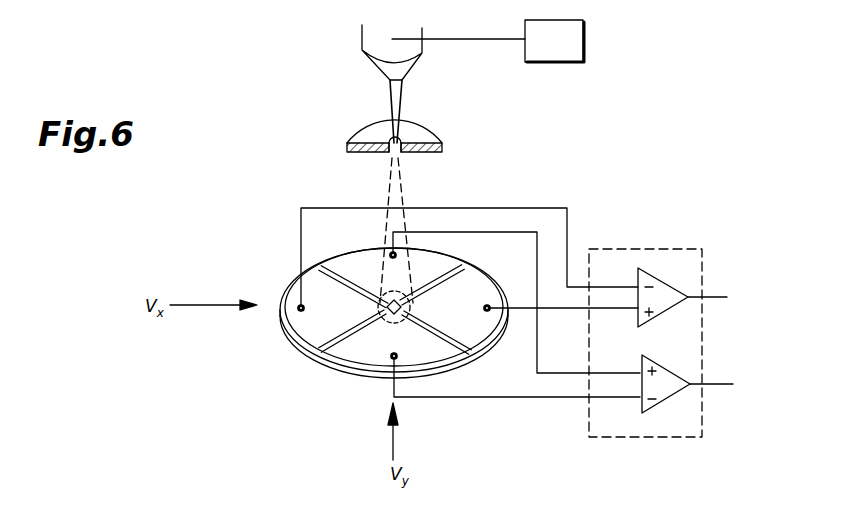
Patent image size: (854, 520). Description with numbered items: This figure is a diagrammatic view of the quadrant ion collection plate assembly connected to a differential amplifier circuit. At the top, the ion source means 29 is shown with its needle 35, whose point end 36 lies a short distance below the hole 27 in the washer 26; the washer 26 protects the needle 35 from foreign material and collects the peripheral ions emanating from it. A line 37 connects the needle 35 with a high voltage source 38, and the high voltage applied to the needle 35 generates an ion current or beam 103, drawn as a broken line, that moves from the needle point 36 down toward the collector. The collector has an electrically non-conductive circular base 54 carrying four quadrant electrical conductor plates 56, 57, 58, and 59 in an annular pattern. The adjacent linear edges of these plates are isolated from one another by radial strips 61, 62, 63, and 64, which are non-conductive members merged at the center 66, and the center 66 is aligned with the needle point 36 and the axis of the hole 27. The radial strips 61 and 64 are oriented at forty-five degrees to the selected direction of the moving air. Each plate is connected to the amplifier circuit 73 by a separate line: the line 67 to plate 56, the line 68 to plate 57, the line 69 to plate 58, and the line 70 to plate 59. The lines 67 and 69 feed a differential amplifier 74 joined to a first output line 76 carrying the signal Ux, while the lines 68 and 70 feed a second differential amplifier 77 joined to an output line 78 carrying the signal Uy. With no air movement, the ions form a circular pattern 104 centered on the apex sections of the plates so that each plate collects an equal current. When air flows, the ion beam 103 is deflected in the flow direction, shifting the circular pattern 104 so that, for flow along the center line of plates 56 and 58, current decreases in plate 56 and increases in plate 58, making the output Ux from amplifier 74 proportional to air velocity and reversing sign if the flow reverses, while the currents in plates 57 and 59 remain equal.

The washer 26 is at (362, 134).
The hole 27 is at (428, 135).
The ion source means 29 is at (358, 46).
The needle 35 is at (403, 86).
The point end 36 is at (393, 150).
The line 37 is at (470, 38).
The high voltage source 38 is at (584, 40).
The circular base 54 is at (310, 360).
The quadrant conductor plate 56 is at (305, 328).
The quadrant conductor plate 57 is at (357, 256).
The quadrant conductor plate 58 is at (470, 282).
The quadrant conductor plate 59 is at (376, 357).
The radial strip 61 is at (330, 265).
The radial strip 62 is at (456, 267).
The radial strip 63 is at (468, 350).
The radial strip 64 is at (333, 350).
The center 66 is at (395, 318).
The line 67 is at (300, 221).
The line 68 is at (510, 231).
The line 69 is at (568, 310).
The line 70 is at (513, 398).
The amplifier circuit 73 is at (631, 248).
The differential amplifier 74 is at (667, 285).
The first output line 76 is at (720, 302).
The second differential amplifier 77 is at (665, 360).
The output line 78 is at (723, 388).
The ion beam 103 is at (400, 177).
The circular pattern 104 is at (406, 307).